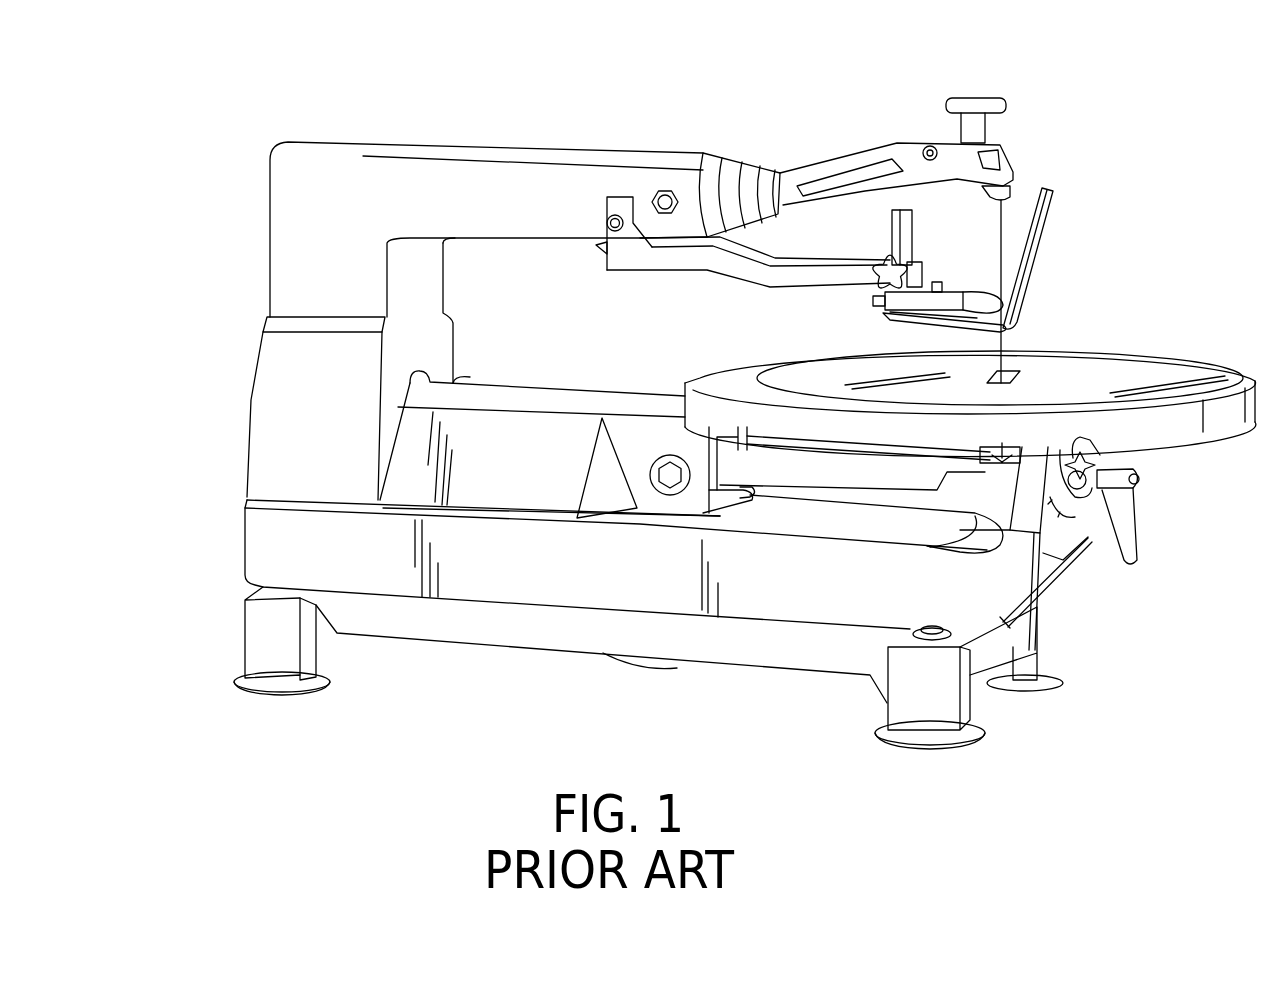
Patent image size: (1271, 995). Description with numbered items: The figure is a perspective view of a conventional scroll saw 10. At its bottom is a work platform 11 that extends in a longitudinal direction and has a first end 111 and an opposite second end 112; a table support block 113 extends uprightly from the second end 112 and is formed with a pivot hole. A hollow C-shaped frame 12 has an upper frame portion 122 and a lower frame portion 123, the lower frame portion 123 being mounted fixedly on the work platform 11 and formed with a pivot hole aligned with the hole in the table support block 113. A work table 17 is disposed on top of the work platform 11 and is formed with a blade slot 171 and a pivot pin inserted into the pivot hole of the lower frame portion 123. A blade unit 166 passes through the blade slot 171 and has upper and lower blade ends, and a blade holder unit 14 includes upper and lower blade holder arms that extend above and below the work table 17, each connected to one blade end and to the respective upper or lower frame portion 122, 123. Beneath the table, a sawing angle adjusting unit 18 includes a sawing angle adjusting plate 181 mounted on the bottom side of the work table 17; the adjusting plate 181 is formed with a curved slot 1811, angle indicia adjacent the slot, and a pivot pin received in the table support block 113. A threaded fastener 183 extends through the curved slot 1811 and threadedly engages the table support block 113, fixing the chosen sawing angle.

The scroll saw 10 is at (225, 522).
The work platform 11 is at (718, 673).
The first end 111 is at (242, 552).
The second end 112 is at (1040, 622).
The table support block 113 is at (1037, 518).
The C-shaped frame 12 is at (340, 142).
The upper frame portion 122 is at (527, 151).
The lower frame portion 123 is at (503, 500).
The blade holder unit 14 is at (800, 170).
The blade unit 166 is at (1003, 235).
The work table 17 is at (1190, 357).
The blade slot 171 is at (1005, 375).
The sawing angle adjusting unit 18 is at (1137, 525).
The sawing angle adjusting plate 181 is at (1073, 453).
The curved slot 1811 is at (1100, 455).
The threaded fastener 183 is at (1103, 492).